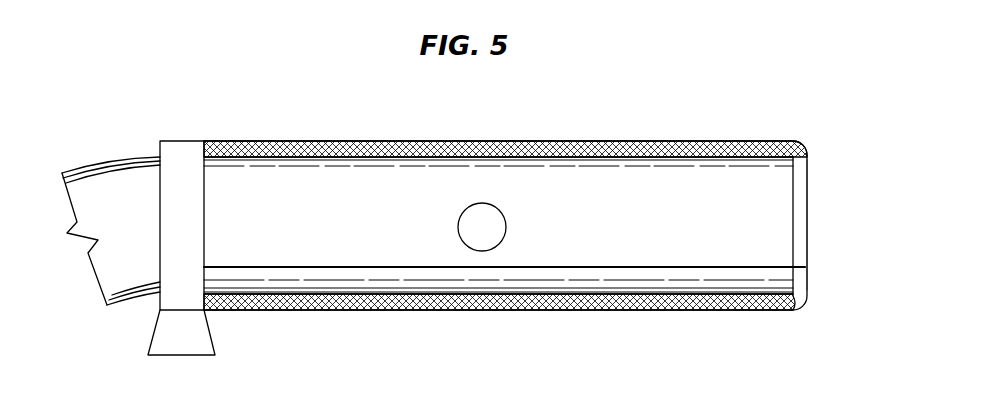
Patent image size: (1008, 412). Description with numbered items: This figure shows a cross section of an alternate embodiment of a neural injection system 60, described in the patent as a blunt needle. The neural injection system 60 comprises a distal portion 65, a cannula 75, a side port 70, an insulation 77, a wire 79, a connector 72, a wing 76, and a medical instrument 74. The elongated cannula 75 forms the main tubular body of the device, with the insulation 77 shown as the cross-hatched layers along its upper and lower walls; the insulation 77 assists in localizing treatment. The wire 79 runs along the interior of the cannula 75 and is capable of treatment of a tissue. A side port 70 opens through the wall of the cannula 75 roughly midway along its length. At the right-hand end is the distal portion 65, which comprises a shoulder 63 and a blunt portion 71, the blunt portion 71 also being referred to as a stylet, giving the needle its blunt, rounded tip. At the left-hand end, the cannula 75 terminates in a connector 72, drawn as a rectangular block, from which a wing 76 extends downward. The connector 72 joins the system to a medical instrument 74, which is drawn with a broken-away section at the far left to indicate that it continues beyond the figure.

The neural injection system 60 is at (662, 121).
The shoulder 63 is at (793, 143).
The distal portion 65 is at (814, 193).
The side port 70 is at (471, 209).
The blunt portion 71 is at (807, 257).
The connector 72 is at (180, 160).
The medical instrument 74 is at (108, 182).
The cannula 75 is at (587, 188).
The wing 76 is at (169, 349).
The insulation 77 is at (615, 310).
The wire 79 is at (402, 268).